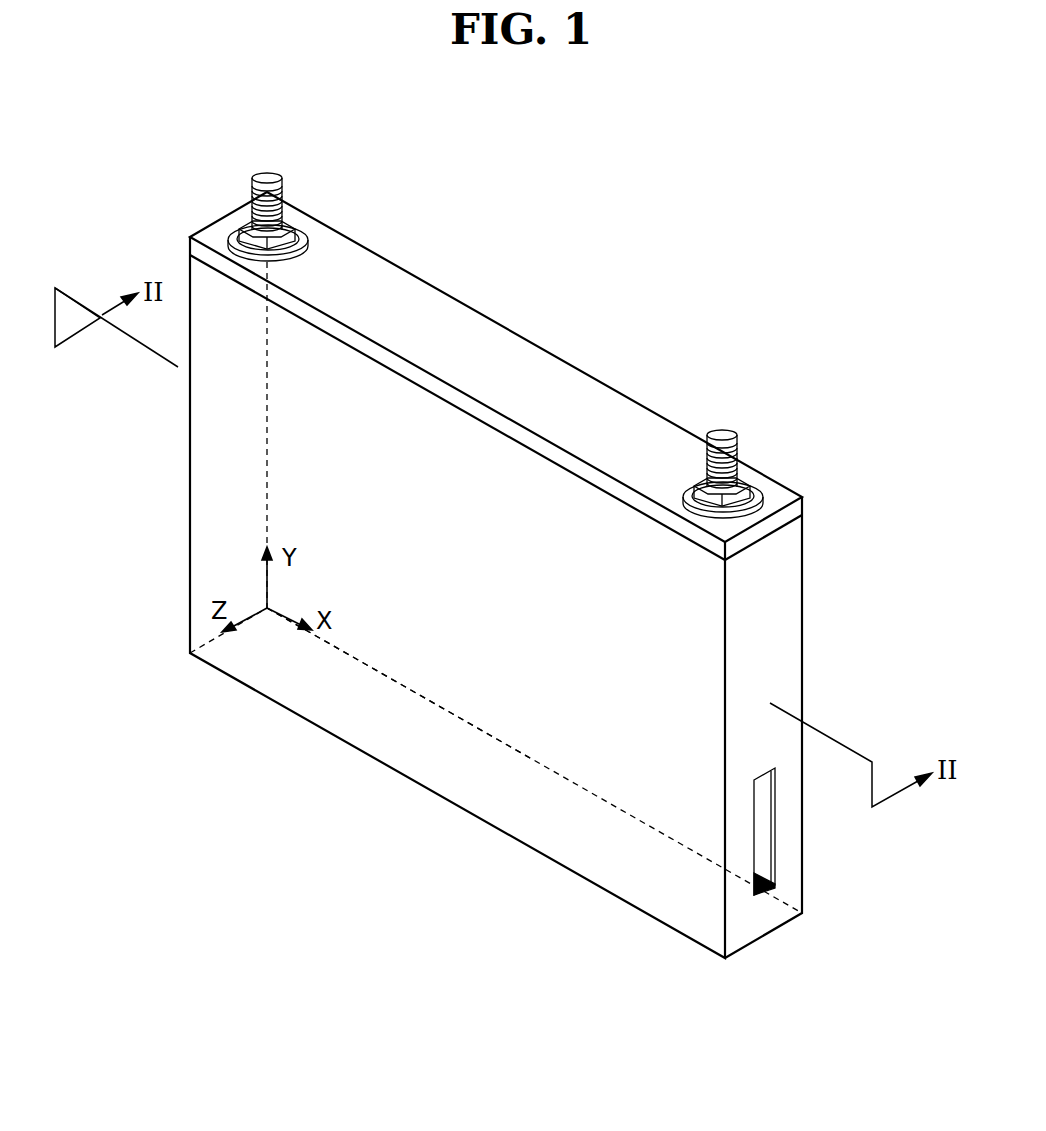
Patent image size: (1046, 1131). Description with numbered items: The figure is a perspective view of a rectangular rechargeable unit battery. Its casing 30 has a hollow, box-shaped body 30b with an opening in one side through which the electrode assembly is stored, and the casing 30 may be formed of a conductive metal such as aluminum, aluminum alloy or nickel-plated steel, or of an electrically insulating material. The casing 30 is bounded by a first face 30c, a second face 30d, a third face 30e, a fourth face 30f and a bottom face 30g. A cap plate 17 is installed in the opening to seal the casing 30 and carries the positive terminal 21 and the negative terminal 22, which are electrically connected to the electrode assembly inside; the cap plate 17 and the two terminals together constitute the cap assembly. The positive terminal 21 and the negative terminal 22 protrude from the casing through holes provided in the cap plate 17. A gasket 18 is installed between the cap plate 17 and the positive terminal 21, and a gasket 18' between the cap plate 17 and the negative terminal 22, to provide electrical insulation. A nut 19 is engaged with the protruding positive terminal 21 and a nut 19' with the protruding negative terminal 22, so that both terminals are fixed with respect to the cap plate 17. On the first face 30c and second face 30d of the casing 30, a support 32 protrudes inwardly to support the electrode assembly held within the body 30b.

The cap plate 17 is at (584, 372).
The gasket 18 is at (311, 234).
The nut 19 is at (307, 211).
The positive terminal 21 is at (261, 178).
The negative terminal 22 is at (724, 437).
The gasket 18' is at (790, 522).
The nut 19' is at (765, 470).
The casing 30 is at (492, 575).
The body 30b is at (462, 785).
The first face 30c is at (802, 643).
The second face 30d is at (213, 463).
The third face 30e is at (460, 663).
The fourth face 30f is at (395, 617).
The bottom face 30g is at (258, 653).
The support 32 is at (765, 847).